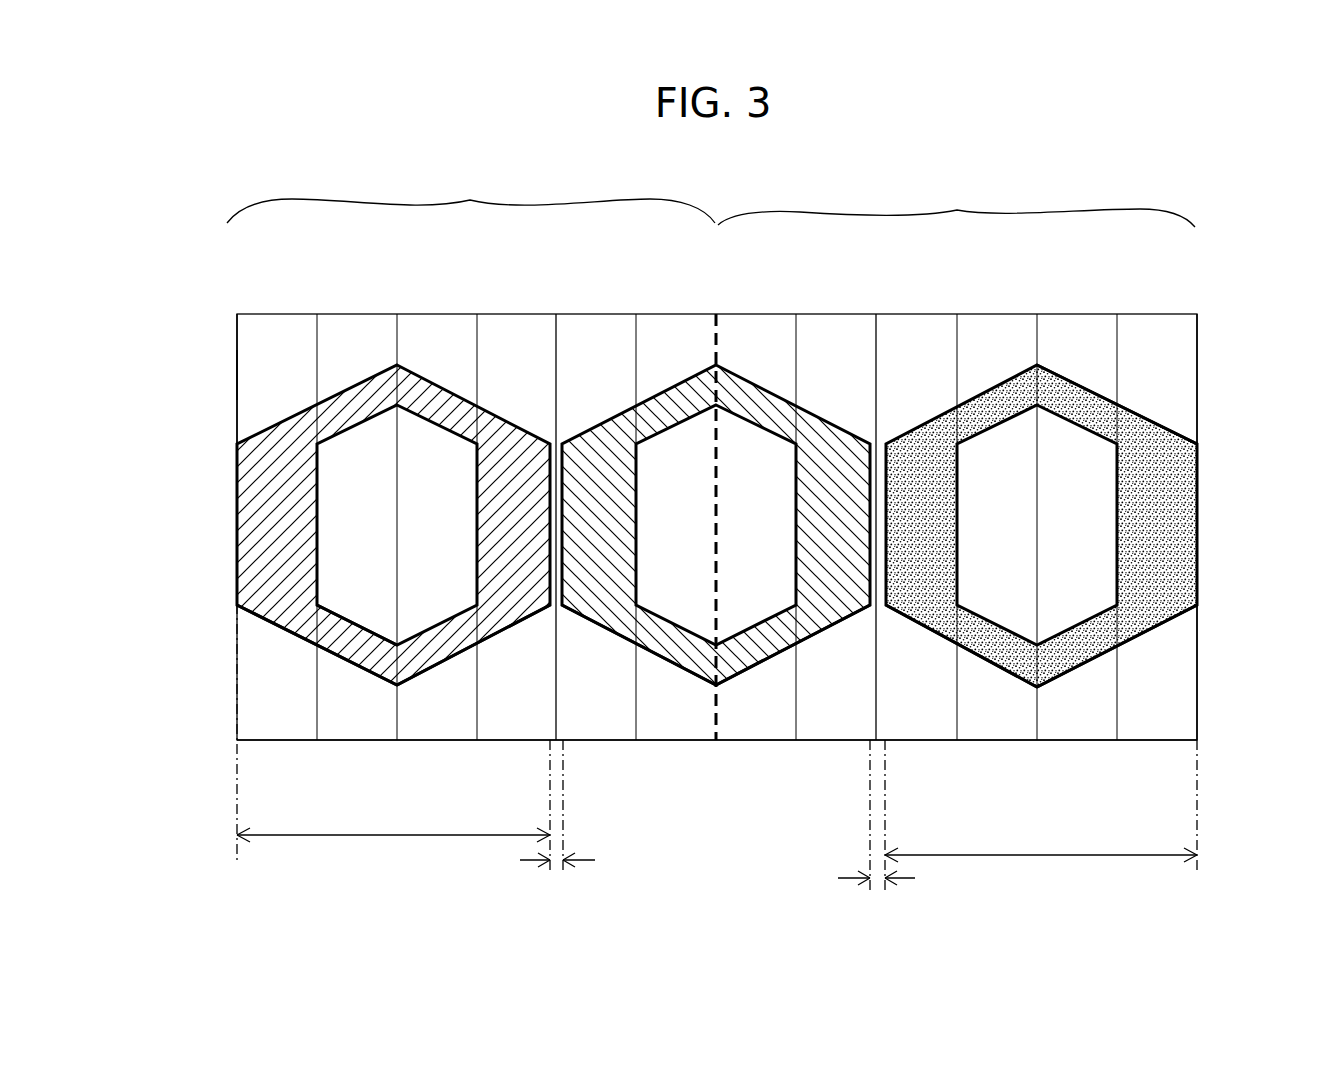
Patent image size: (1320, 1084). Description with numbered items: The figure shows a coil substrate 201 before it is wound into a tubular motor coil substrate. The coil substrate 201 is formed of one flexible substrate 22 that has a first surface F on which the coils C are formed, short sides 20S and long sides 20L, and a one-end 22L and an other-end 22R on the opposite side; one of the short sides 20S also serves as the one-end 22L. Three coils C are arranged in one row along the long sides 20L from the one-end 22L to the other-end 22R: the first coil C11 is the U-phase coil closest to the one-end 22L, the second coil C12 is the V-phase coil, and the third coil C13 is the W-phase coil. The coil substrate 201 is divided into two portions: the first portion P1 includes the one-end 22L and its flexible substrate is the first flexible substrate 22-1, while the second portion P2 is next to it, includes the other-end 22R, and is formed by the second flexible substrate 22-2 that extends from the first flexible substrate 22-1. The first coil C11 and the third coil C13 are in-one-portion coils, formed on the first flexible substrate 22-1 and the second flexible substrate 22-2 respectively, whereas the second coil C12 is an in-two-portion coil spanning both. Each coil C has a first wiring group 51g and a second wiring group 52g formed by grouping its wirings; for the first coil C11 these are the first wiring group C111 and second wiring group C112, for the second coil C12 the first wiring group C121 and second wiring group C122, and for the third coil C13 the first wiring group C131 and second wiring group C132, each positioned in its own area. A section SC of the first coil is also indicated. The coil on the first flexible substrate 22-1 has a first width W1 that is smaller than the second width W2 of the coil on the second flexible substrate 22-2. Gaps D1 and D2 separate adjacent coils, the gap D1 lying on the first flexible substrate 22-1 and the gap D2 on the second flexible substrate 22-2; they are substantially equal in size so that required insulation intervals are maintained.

The coil substrate 201 is at (237, 314).
The one-end 22L is at (237, 336).
The short sides 20S is at (237, 369).
The first flexible substrate 22-1 is at (247, 416).
The second flexible substrate 22-2 is at (1158, 322).
The other-end 22R is at (1197, 386).
The flexible substrate 22 is at (660, 740).
The long sides 20L is at (750, 742).
The first coil C11 is at (375, 377).
The second coil C12 is at (723, 369).
The third coil C13 is at (1037, 365).
The coil C is at (1137, 410).
The first wiring group 51g is at (637, 526).
The second wiring group 52g is at (797, 526).
The first surface F is at (237, 645).
The first wiring group of the first coil C111 is at (292, 632).
The coil side section SC is at (358, 612).
The second wiring group of the first coil C112 is at (492, 632).
The first wiring group of the second coil C121 is at (598, 628).
The second wiring group of the second coil C122 is at (845, 625).
The first wiring group of the third coil C131 is at (915, 620).
The second wiring group of the third coil C132 is at (1175, 620).
The first width W1 is at (393, 806).
The second width W2 is at (1041, 805).
The gap D1 is at (557, 825).
The gap D2 is at (876, 830).
The first portion P1 is at (471, 192).
The second portion P2 is at (956, 184).